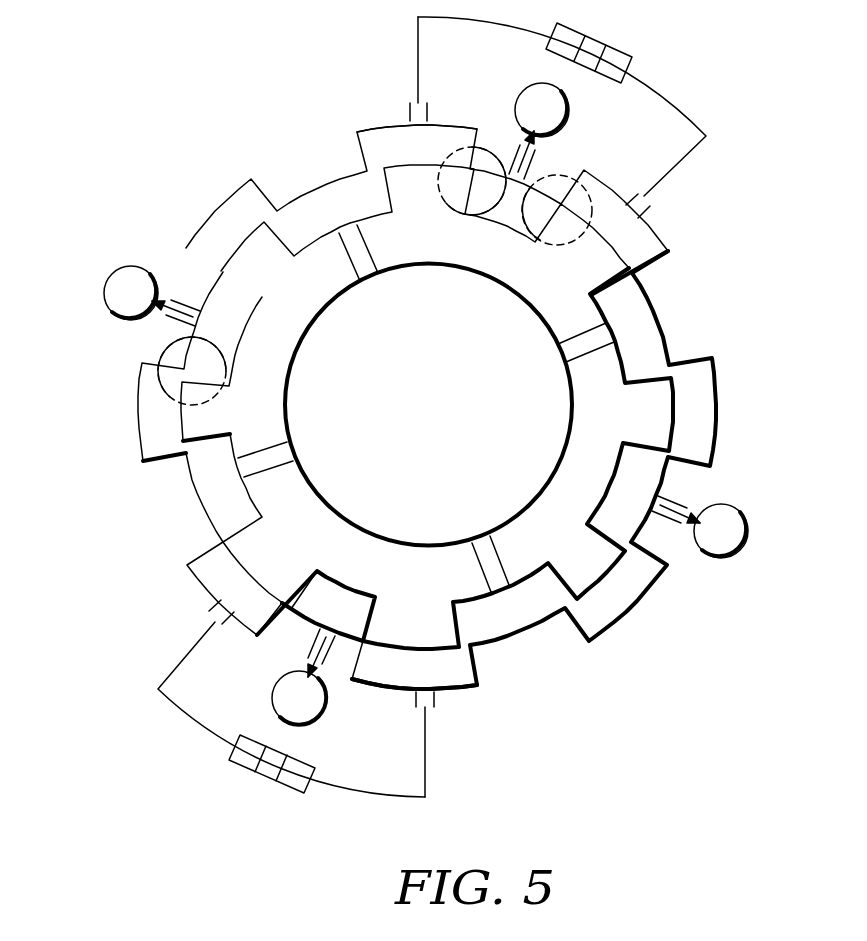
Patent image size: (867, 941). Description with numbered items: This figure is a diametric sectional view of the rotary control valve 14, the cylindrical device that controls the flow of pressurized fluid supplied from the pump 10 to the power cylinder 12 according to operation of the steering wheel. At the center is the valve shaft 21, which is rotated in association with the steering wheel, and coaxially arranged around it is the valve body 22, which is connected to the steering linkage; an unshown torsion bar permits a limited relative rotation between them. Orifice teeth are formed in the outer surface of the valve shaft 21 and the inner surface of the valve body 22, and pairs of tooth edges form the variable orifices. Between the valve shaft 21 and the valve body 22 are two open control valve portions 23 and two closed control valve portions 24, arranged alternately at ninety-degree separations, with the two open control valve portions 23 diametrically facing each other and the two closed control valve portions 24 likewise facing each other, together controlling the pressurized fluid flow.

The pump 10 is at (572, 117).
The power cylinder 12 is at (617, 50).
The rotary control valve 14 is at (432, 407).
The valve shaft 21 is at (612, 370).
The valve body 22 is at (306, 180).
The open control valve portion 23 is at (127, 352).
The closed control valve portion 24 is at (388, 94).